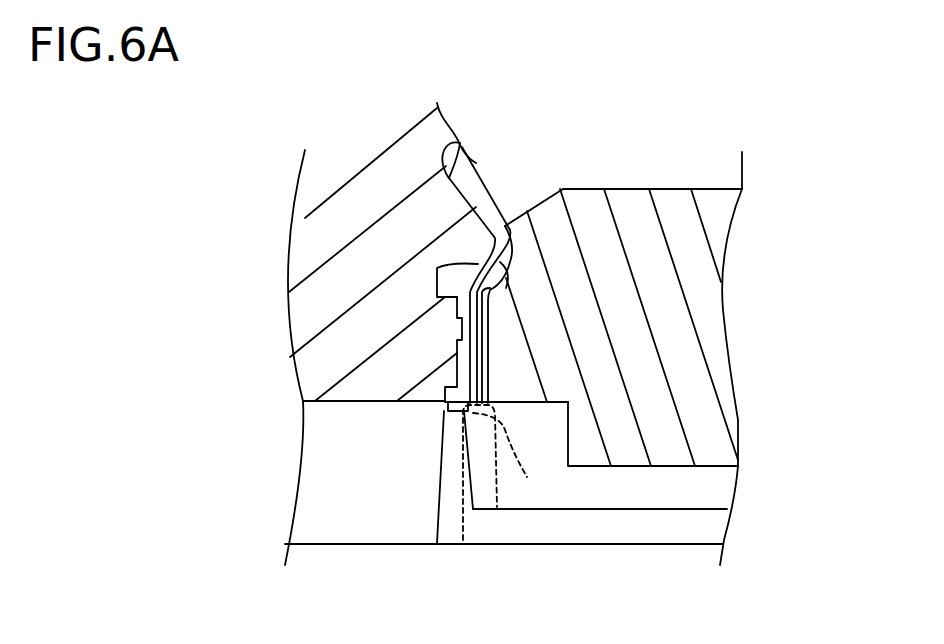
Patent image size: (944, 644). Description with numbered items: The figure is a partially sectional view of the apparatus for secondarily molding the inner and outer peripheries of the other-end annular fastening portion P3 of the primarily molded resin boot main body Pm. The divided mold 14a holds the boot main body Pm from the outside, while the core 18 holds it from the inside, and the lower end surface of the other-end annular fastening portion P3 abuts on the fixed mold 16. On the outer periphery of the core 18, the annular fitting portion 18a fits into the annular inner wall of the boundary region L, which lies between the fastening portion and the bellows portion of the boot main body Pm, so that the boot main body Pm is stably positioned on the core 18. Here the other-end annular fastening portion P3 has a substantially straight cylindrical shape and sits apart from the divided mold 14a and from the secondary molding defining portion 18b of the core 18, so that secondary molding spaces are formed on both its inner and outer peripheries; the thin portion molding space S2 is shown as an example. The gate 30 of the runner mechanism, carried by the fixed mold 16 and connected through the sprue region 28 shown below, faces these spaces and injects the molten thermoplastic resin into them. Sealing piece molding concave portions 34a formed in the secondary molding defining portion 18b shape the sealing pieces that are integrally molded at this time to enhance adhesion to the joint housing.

The divided mold 14a is at (306, 375).
The fixed mold 16 is at (303, 497).
The core 18 is at (680, 189).
The annular fitting portion 18a is at (488, 231).
The secondary molding defining portion 18b is at (437, 290).
The lower plate 28 is at (513, 527).
The gate 30 is at (447, 406).
The sealing piece molding concave portion 34a is at (493, 303).
The thin portion molding space S2 is at (456, 280).
The other-end annular fastening portion P3 is at (449, 337).
The boot main body Pm is at (433, 135).
The boundary region L is at (466, 217).